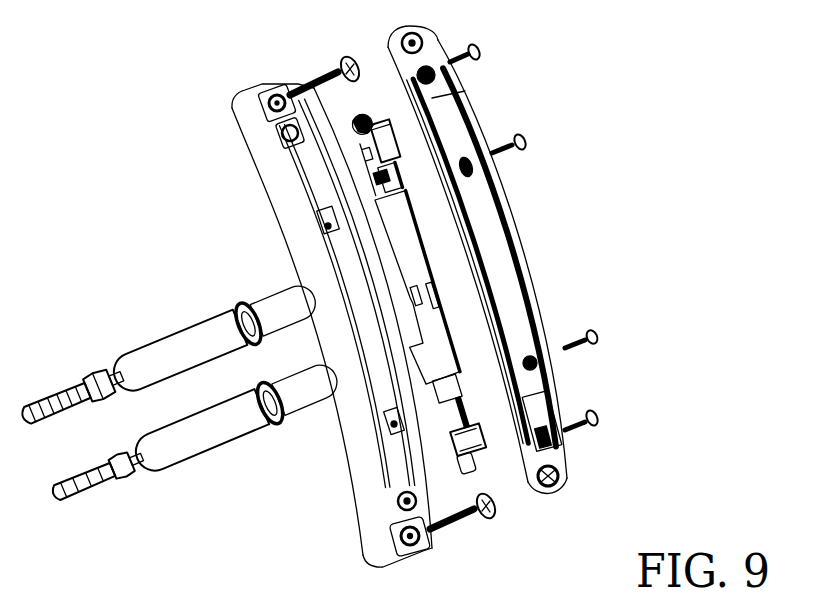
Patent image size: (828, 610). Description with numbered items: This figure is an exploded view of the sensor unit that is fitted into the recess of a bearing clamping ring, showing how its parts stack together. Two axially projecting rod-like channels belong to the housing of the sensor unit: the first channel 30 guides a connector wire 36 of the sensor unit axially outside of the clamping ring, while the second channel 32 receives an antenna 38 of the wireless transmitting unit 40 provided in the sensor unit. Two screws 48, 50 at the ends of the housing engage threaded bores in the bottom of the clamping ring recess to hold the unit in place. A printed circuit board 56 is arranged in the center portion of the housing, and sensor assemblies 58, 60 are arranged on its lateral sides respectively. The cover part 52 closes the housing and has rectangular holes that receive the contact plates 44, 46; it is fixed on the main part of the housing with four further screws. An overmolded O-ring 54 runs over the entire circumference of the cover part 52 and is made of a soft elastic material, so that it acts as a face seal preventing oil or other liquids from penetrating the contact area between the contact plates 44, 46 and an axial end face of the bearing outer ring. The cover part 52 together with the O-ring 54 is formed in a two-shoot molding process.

The first channel 30 is at (222, 420).
The second channel 32 is at (193, 332).
The connector wire 36 is at (120, 480).
The antenna 38 is at (68, 398).
The wireless transmitting unit 40 is at (433, 353).
The contact plate 44 is at (385, 138).
The contact plate 46 is at (485, 420).
The screw 48 is at (303, 84).
The screw 50 is at (466, 525).
The cover part 52 is at (507, 253).
The O-ring 54 is at (497, 222).
The printed circuit board 56 is at (403, 227).
The sensor assembly 58 is at (376, 158).
The sensor assembly 60 is at (485, 420).